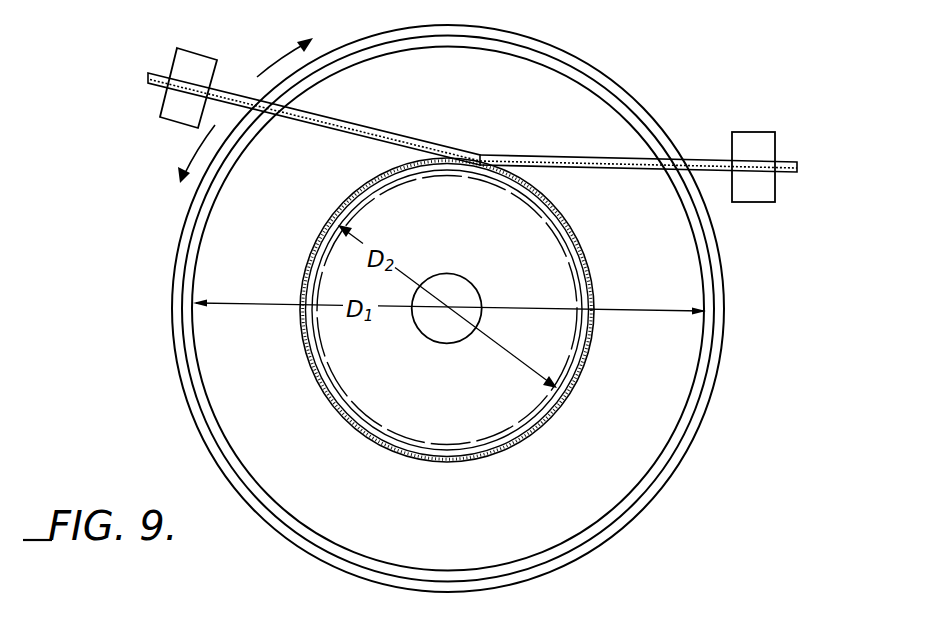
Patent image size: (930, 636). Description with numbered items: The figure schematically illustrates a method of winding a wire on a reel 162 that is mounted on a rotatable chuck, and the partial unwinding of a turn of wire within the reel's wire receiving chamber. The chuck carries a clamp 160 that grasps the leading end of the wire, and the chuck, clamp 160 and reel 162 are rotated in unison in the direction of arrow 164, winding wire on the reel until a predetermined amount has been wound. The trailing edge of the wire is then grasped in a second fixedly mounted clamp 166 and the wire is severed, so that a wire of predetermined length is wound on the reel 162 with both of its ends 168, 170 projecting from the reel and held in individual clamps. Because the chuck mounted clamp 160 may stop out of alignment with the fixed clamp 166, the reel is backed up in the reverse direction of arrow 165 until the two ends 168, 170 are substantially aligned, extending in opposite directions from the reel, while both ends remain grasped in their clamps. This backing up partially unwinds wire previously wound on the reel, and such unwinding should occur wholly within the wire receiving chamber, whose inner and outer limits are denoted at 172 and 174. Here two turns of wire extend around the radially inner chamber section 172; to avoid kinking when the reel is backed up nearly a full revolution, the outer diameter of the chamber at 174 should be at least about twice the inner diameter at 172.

The clamp 160 is at (177, 50).
The reel 162 is at (742, 281).
The arrow 164 is at (193, 153).
The arrow 165 is at (288, 56).
The second fixedly mounted clamp 166 is at (773, 133).
The wire end 168 is at (257, 64).
The wire end 170 is at (712, 160).
The inner limit of wire receiving chamber 172 is at (377, 422).
The outer limit of wire receiving chamber 174 is at (673, 428).